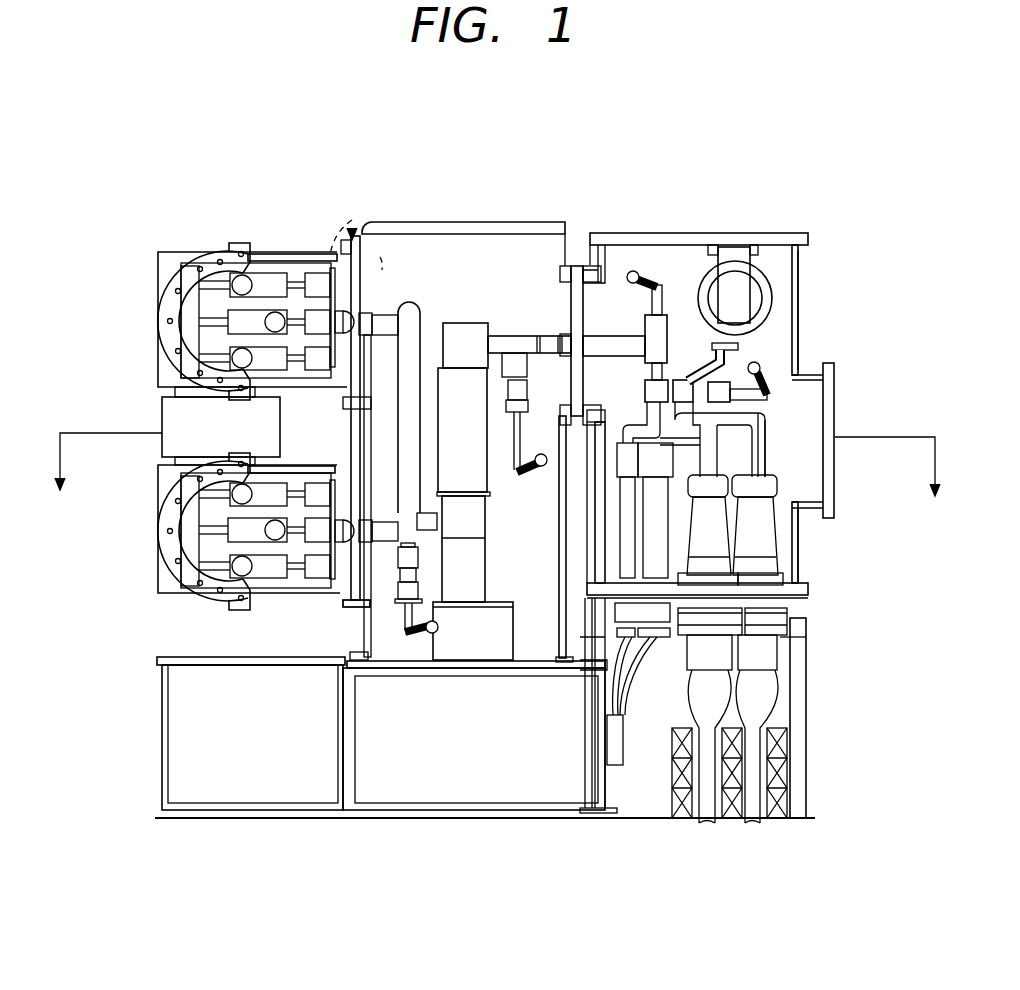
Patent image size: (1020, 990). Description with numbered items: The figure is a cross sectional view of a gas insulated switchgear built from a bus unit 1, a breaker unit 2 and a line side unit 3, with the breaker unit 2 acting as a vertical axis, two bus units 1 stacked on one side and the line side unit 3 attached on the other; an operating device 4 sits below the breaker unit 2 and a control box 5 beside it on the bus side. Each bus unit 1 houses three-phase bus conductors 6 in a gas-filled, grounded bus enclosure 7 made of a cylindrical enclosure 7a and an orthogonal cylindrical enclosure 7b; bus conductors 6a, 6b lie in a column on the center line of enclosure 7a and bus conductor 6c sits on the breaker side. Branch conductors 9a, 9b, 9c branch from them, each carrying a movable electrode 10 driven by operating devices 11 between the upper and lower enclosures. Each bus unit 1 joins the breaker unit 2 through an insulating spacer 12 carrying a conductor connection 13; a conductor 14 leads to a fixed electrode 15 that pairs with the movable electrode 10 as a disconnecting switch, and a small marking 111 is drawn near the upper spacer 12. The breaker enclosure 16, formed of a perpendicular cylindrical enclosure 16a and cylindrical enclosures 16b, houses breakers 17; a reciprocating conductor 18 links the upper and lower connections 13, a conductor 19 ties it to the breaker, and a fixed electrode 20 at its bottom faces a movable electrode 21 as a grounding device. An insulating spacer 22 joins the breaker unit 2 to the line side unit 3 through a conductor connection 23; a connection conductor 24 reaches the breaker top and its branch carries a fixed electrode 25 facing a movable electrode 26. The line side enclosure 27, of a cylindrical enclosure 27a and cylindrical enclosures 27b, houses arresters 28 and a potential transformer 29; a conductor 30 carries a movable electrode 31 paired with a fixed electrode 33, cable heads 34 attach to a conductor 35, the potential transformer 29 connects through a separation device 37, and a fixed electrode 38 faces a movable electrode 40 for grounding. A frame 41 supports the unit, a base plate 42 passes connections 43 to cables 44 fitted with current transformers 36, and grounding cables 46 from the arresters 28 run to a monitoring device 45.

The bus unit 1 is at (158, 250).
The breaker unit 2 is at (495, 220).
The line side unit 3 is at (847, 397).
The operating device 4 is at (468, 795).
The control box 5 is at (258, 795).
The bus conductors 6 is at (240, 500).
The bus conductor 6a is at (200, 282).
The bus conductor 6b is at (195, 370).
The bus conductor 6c is at (305, 275).
The bus enclosure 7 is at (240, 580).
The cylindrical enclosure 7a is at (172, 310).
The cylindrical enclosure 7b is at (265, 260).
The branch conductor 9a is at (268, 278).
The branch conductor 9b is at (210, 332).
The branch conductor 9c is at (262, 404).
The movable electrode 10 is at (292, 362).
The operating devices 11 is at (285, 458).
The insulating spacer 12 is at (355, 238).
The conductor connection 13 is at (372, 310).
The conductor 14 is at (372, 292).
The fixed electrode 15 is at (313, 370).
The breaker enclosure 16 is at (425, 222).
The cylindrical enclosure 16a is at (577, 266).
The cylindrical enclosure 16b is at (360, 420).
The breaker 17 is at (485, 470).
The reciprocating conductor 18 is at (420, 320).
The conductor 19 is at (442, 545).
The fixed electrode 20 is at (398, 555).
The movable electrode 21 is at (398, 640).
The insulating spacer 22 is at (587, 412).
The conductor connection 23 is at (596, 337).
The connection conductor 24 is at (528, 336).
The fixed electrode 25 is at (520, 352).
The movable electrode 26 is at (526, 406).
The line side enclosure 27 is at (770, 233).
The cylindrical enclosure 27a is at (800, 271).
The cylindrical enclosure 27b is at (590, 233).
The arrester 28 is at (661, 628).
The potential transformer 29 is at (773, 302).
The conductor 30 is at (662, 315).
The movable electrode 31 is at (665, 368).
The fixed electrode 33 is at (645, 390).
The cable heads 34 is at (780, 510).
The conductor 35 is at (770, 440).
The current transformers 36 is at (806, 801).
The separation device 37 is at (738, 356).
The fixed electrode 38 is at (748, 425).
The movable electrode 40 is at (735, 397).
The frame 41 is at (806, 753).
The base plate 42 is at (808, 593).
The connections 43 is at (770, 656).
The cables 44 is at (760, 695).
The monitoring device 45 is at (622, 765).
The grounding cables 46 is at (598, 700).
The arrow 111 is at (352, 232).